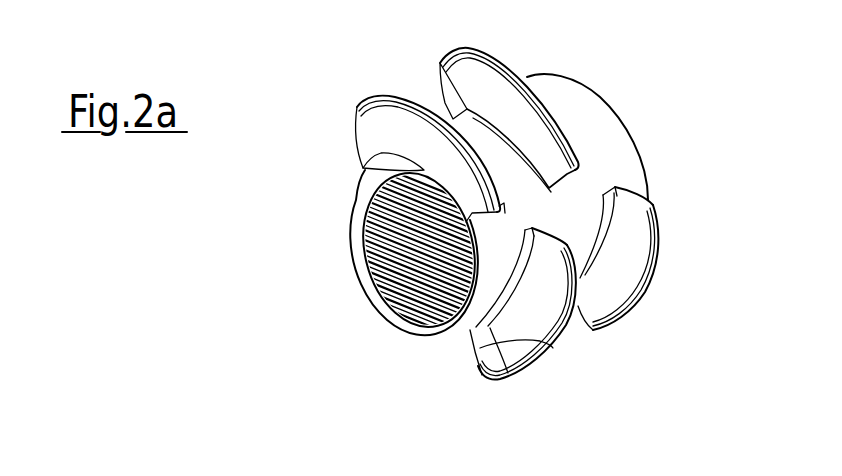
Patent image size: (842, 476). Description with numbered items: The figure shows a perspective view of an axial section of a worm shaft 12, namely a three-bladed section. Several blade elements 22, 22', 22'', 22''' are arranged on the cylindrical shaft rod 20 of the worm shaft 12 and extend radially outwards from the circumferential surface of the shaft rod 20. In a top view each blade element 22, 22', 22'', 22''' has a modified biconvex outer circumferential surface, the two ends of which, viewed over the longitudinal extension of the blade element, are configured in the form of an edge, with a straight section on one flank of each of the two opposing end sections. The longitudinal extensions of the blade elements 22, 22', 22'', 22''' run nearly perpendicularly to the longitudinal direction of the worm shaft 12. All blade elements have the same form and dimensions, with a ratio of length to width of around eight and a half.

The worm shaft 12 is at (233, 328).
The cylindrical shaft rod 20 is at (615, 172).
The blade element 22 is at (529, 96).
The blade element 22' is at (411, 127).
The blade element 22'' is at (670, 258).
The blade element 22''' is at (474, 317).